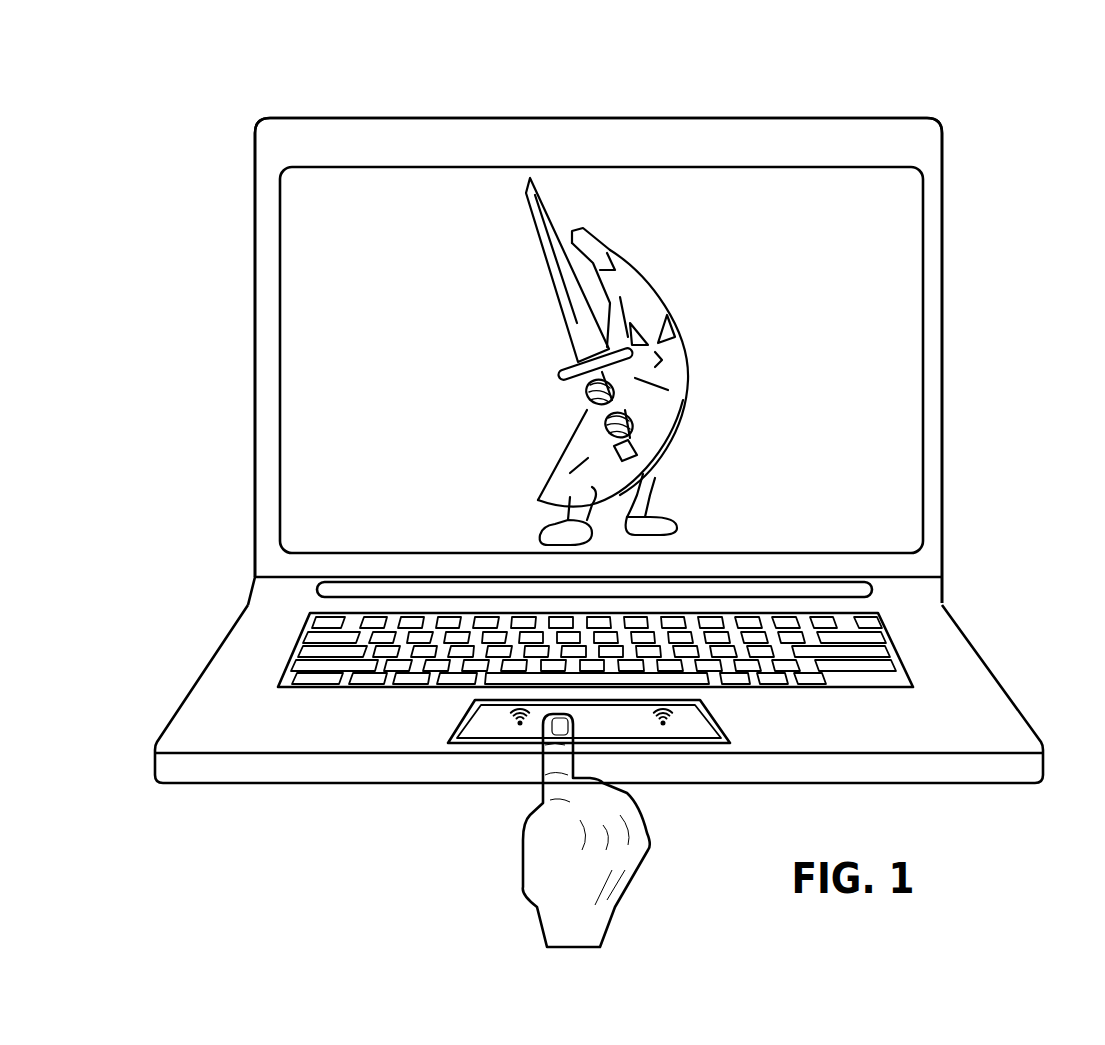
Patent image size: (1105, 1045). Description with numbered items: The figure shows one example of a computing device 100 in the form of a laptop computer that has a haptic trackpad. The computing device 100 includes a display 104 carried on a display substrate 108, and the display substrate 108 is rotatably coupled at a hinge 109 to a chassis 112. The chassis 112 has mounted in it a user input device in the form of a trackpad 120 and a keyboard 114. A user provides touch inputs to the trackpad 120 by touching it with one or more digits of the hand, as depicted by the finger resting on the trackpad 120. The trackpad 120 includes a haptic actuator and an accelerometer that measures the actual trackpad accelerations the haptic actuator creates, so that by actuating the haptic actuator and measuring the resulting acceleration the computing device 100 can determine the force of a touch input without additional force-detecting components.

The computing device 100 is at (165, 95).
The display 104 is at (845, 255).
The display substrate 108 is at (255, 230).
The hinge 109 is at (958, 582).
The chassis 112 is at (1032, 728).
The keyboard 114 is at (282, 627).
The trackpad 120 is at (698, 727).